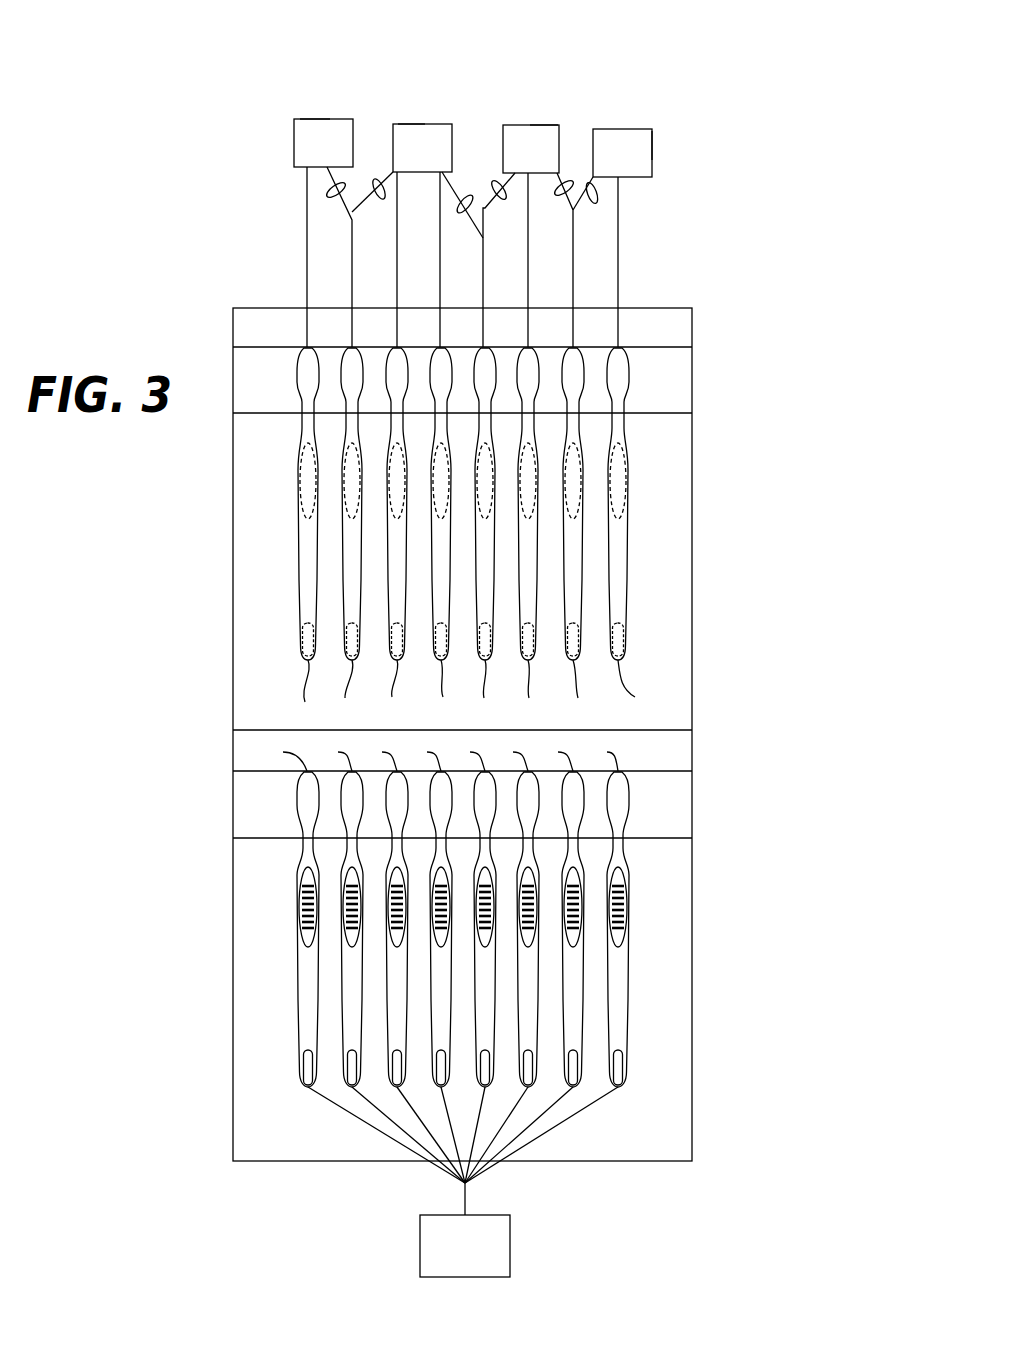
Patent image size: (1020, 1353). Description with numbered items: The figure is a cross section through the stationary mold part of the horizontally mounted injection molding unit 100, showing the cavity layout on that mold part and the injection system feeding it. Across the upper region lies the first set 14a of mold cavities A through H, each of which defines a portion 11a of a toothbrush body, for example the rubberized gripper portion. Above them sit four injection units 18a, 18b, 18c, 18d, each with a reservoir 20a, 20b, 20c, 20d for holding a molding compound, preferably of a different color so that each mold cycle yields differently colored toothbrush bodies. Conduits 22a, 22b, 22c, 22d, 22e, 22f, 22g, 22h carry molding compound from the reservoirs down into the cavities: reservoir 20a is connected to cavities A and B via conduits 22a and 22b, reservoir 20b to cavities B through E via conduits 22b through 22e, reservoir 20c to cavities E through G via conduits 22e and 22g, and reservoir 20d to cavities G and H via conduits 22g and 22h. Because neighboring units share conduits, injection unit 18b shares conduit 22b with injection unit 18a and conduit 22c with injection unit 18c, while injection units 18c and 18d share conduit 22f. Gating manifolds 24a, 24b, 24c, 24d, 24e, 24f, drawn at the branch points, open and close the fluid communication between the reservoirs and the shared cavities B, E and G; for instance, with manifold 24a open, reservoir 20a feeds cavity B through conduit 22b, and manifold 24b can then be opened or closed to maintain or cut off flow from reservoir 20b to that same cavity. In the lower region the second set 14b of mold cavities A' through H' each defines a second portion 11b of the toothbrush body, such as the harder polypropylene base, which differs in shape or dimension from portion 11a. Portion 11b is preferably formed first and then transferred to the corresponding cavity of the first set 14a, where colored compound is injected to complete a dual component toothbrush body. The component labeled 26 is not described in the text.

The injection molding unit 100 is at (730, 428).
The injection unit 18a is at (294, 140).
The injection unit 18b is at (425, 124).
The injection unit 18c is at (535, 123).
The injection unit 18d is at (652, 155).
The reservoir 20a is at (313, 119).
The reservoir 20b is at (412, 124).
The reservoir 20c is at (553, 125).
The reservoir 20d is at (652, 137).
The conduit 22a is at (307, 222).
The conduit 22b is at (352, 248).
The conduit 22c is at (397, 252).
The conduit 22d is at (440, 268).
The conduit 22e is at (485, 297).
The conduit 22f is at (529, 265).
The conduit 22g is at (573, 250).
The conduit 22h is at (618, 235).
The gating manifold 24a is at (326, 193).
The gating manifold 24b is at (377, 178).
The gating manifold 24c is at (467, 193).
The gating manifold 24d is at (494, 180).
The gating manifold 24e is at (572, 187).
The gating manifold 24f is at (600, 197).
The first set of mold cavities 14a is at (467, 534).
The second set of mold cavities 14b is at (467, 912).
The portion of toothbrush body 11a is at (300, 593).
The second portion of toothbrush body 11b is at (300, 985).
The detector 26 is at (442, 1247).